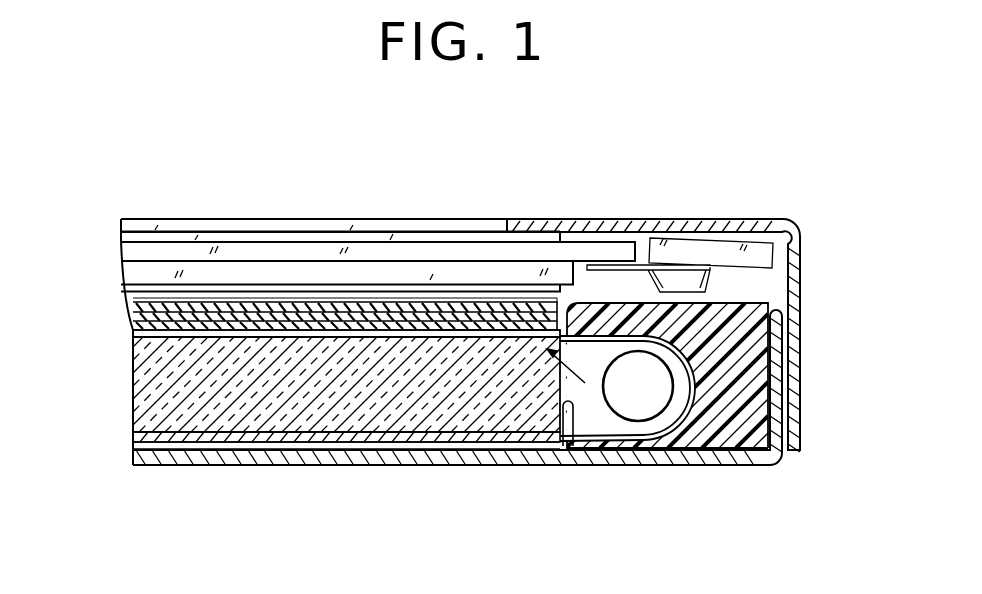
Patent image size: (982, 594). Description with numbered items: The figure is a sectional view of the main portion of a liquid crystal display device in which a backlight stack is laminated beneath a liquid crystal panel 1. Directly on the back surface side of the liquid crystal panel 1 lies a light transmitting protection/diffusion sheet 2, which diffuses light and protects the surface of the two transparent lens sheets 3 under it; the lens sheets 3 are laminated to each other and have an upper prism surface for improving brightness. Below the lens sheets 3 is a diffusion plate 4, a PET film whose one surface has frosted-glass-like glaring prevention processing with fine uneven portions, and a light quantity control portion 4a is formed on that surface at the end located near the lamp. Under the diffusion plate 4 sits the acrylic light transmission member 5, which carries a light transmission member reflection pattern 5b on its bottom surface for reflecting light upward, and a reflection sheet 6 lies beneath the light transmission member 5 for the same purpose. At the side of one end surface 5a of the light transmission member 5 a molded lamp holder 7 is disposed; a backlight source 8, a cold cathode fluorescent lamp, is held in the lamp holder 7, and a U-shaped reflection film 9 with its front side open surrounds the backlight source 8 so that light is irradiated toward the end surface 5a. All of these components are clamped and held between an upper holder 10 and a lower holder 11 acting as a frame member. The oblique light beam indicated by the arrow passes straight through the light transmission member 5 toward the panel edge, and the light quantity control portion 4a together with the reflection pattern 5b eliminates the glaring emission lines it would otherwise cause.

The liquid crystal panel 1 is at (117, 235).
The protection/diffusion sheet 2 is at (238, 298).
The lens sheets 3 is at (134, 308).
The diffusion plate 4 is at (135, 340).
The light quantity control portion 4a is at (480, 336).
The light transmission member 5 is at (162, 404).
The end surface 5a is at (571, 448).
The light transmission member reflection pattern 5b is at (250, 437).
The reflection sheet 6 is at (397, 442).
The lamp holder 7 is at (740, 314).
The backlight source 8 is at (658, 384).
The reflection film 9 is at (615, 434).
The upper holder 10 is at (545, 220).
The lower holder 11 is at (662, 465).